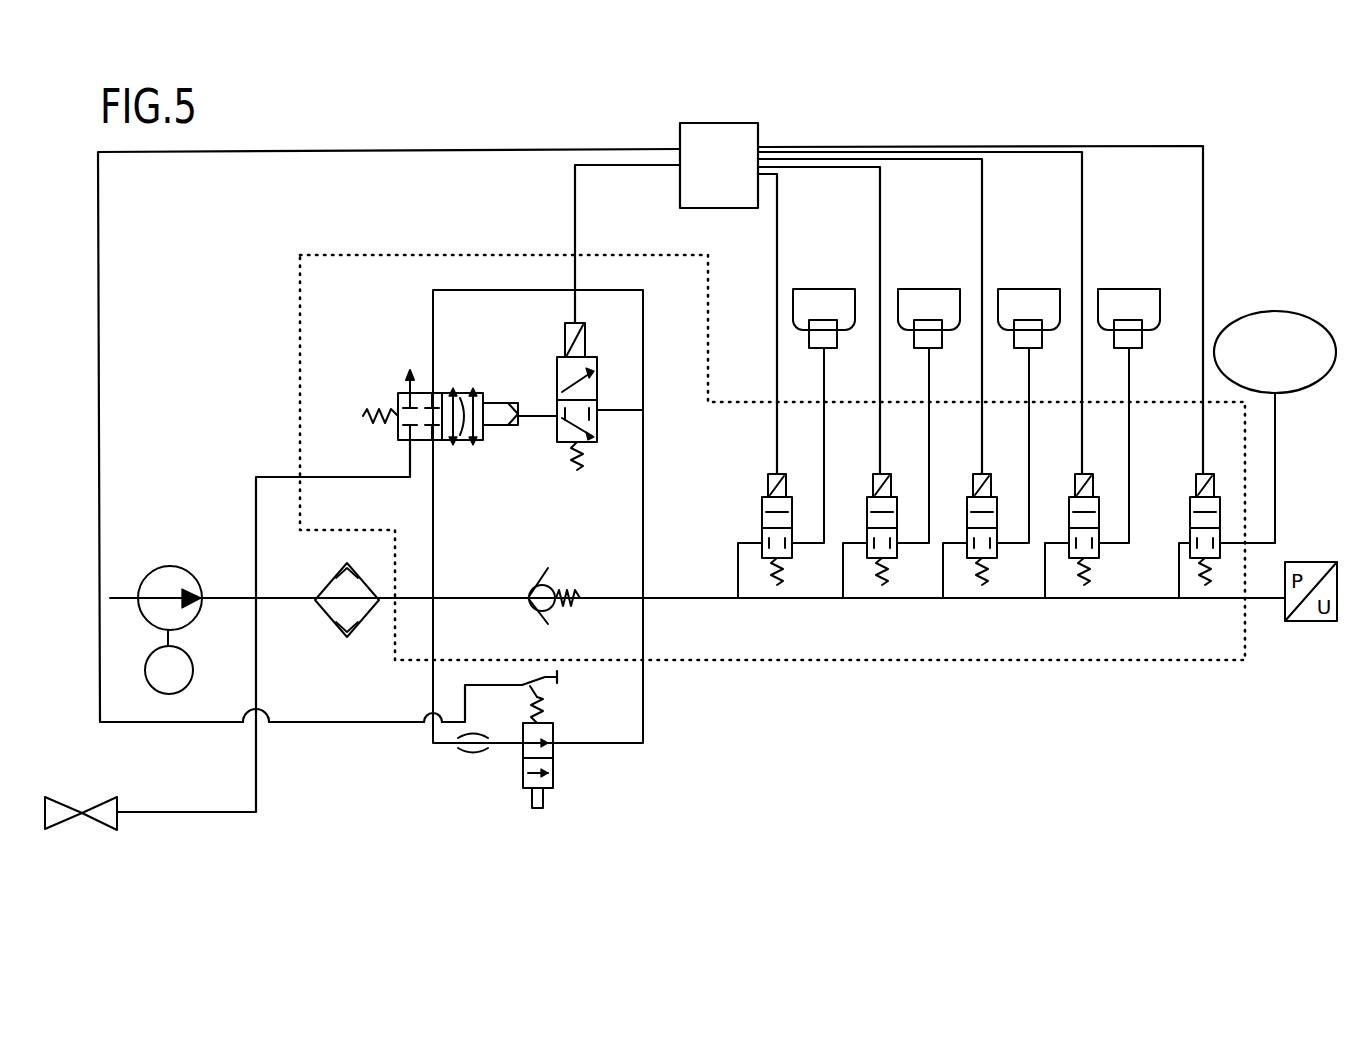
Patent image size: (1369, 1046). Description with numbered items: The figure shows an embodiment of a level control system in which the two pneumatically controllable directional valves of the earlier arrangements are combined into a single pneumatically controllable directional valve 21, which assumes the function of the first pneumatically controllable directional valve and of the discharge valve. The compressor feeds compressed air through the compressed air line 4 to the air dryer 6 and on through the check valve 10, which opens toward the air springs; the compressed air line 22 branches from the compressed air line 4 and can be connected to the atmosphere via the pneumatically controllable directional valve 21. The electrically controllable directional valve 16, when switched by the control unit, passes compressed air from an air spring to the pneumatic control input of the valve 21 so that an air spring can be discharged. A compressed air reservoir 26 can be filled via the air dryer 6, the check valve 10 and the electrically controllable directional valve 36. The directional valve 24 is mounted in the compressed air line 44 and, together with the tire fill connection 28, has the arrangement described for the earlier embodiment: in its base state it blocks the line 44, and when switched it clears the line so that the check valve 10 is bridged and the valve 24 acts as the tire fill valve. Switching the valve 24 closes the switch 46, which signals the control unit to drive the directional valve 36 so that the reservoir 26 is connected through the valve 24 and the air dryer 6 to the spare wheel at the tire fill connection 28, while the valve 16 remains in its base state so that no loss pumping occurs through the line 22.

The compressed air line 4 is at (288, 600).
The air dryer 6 is at (367, 617).
The check valve 10 is at (567, 620).
The electrically controllable directional valve 16 is at (598, 388).
The pneumatically controllable directional valve 21 is at (461, 395).
The compressed air line 22 is at (252, 535).
The directional valve 24 is at (557, 785).
The compressed air reservoir 26 is at (1260, 304).
The tire fill connection 28 is at (108, 817).
The electrically controllable directional valve 36 is at (1200, 562).
The compressed air line 44 is at (618, 743).
The switch 46 is at (535, 687).